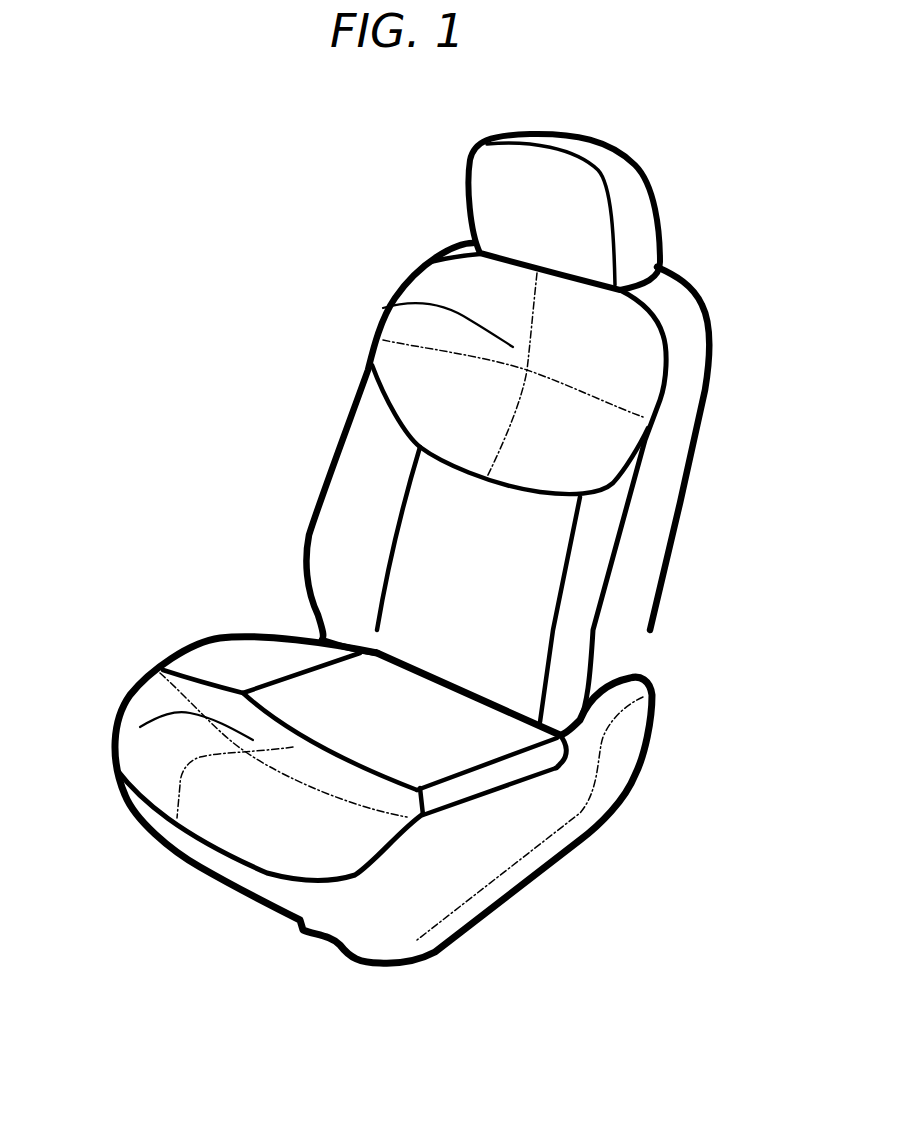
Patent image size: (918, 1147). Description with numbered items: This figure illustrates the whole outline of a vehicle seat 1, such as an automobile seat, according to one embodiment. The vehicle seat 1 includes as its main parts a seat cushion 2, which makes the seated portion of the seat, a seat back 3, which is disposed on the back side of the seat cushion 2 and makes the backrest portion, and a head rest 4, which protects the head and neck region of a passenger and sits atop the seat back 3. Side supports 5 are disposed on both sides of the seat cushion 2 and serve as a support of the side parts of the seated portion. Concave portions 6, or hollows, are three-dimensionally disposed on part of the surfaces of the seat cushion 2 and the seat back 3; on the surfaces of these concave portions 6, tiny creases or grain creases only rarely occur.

The vehicle seat 1 is at (647, 128).
The seat cushion 2 is at (263, 833).
The seat back 3 is at (658, 492).
The head rest 4 is at (628, 218).
The side support 5 is at (220, 657).
The concave portion 6 is at (383, 308).